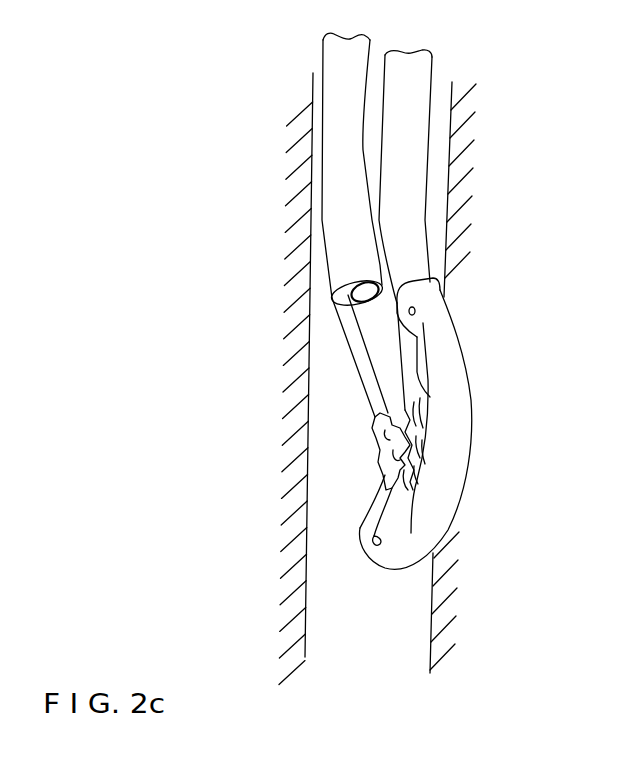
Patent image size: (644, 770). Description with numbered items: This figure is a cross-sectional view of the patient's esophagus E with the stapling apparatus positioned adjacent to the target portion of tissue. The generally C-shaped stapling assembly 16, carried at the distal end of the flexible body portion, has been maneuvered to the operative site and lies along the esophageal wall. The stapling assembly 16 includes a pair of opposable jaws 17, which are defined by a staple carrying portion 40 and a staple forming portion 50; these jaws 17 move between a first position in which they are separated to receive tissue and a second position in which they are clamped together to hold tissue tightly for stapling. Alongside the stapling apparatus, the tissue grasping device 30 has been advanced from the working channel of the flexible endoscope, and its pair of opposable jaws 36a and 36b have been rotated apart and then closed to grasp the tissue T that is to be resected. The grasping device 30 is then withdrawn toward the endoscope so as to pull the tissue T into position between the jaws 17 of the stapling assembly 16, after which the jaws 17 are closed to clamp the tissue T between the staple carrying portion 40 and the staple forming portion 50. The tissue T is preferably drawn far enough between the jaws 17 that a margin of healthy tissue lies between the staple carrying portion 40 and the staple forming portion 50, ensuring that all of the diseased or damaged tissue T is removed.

The esophagus E is at (306, 273).
The tissue T is at (413, 473).
The stapling assembly 16 is at (413, 533).
The opposable jaws 17 is at (452, 477).
The tissue grasping device 30 is at (357, 360).
The jaw of grasping device 36a is at (400, 405).
The jaw of grasping device 36b is at (378, 452).
The staple carrying portion 40 is at (438, 338).
The staple forming portion 50 is at (403, 357).